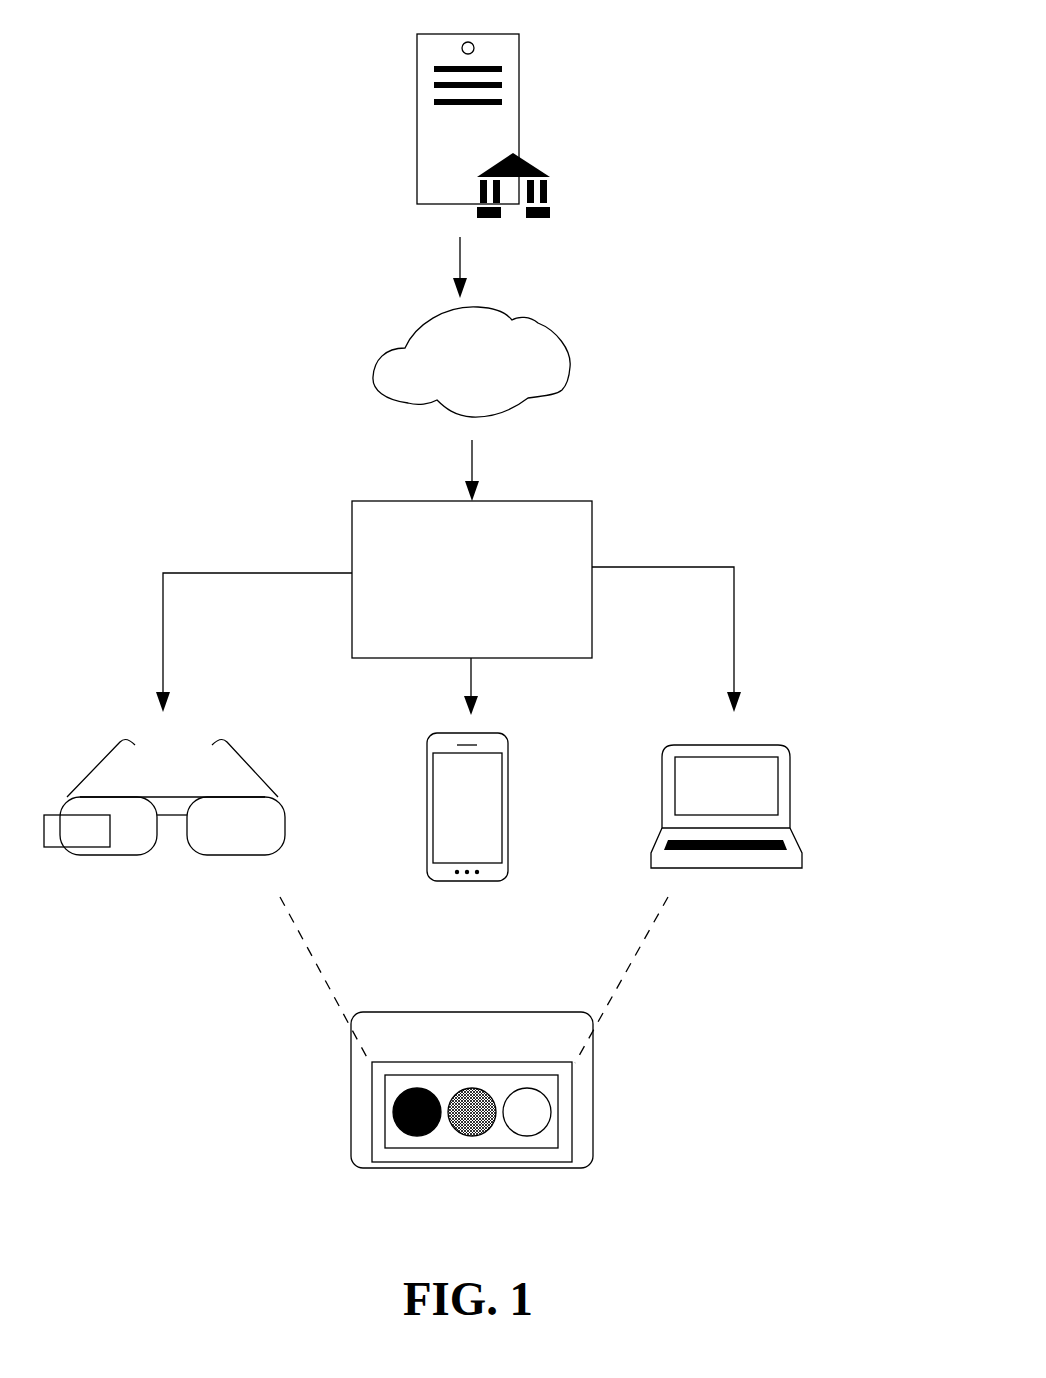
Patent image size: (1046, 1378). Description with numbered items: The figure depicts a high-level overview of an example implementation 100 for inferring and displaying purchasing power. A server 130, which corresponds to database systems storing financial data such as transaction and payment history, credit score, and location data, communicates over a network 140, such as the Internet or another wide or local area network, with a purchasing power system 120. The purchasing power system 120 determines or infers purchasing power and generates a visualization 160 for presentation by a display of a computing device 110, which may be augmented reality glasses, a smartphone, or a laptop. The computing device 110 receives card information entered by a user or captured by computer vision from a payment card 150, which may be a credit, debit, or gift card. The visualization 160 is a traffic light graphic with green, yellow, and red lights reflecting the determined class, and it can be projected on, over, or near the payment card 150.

The implementation 100 is at (733, 40).
The computing device 110 is at (823, 733).
The purchasing power system 120 is at (532, 501).
The server 130 is at (519, 100).
The network 140 is at (542, 332).
The payment card 150 is at (470, 1012).
The visualization 160 is at (573, 1097).